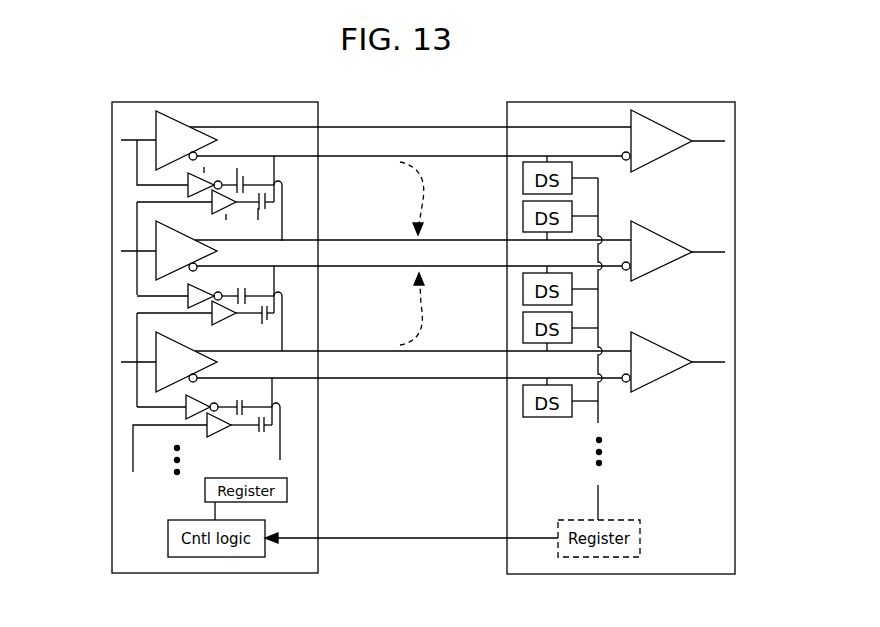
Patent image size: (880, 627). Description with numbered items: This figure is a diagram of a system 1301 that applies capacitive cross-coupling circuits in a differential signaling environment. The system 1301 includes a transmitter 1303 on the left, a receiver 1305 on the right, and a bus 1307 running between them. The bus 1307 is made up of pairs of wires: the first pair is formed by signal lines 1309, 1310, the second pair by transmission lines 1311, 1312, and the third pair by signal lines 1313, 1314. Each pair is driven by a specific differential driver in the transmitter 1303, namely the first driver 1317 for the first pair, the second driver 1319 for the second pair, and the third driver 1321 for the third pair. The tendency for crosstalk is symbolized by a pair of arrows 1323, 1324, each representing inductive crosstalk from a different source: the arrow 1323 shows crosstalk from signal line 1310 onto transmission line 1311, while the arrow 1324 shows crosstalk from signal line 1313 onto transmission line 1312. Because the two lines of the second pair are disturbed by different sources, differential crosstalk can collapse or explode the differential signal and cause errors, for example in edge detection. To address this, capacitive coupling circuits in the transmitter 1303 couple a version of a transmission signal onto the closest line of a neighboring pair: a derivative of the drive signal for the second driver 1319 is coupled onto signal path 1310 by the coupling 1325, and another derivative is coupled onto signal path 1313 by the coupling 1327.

The system 1301 is at (203, 53).
The transmitter 1303 is at (215, 102).
The receiver 1305 is at (622, 102).
The bus 1307 is at (473, 94).
The signal line 1309 is at (339, 127).
The signal line 1310 is at (380, 156).
The transmission line 1311 is at (350, 228).
The transmission line 1312 is at (360, 266).
The signal line 1313 is at (345, 337).
The signal line 1314 is at (357, 377).
The differential driver 1317 is at (166, 111).
The second driver 1319 is at (157, 232).
The differential driver 1321 is at (157, 348).
The arrow 1323 is at (430, 188).
The arrow 1324 is at (430, 318).
The capacitive coupling circuit 1325 is at (150, 202).
The capacitive coupling circuit 1327 is at (137, 290).